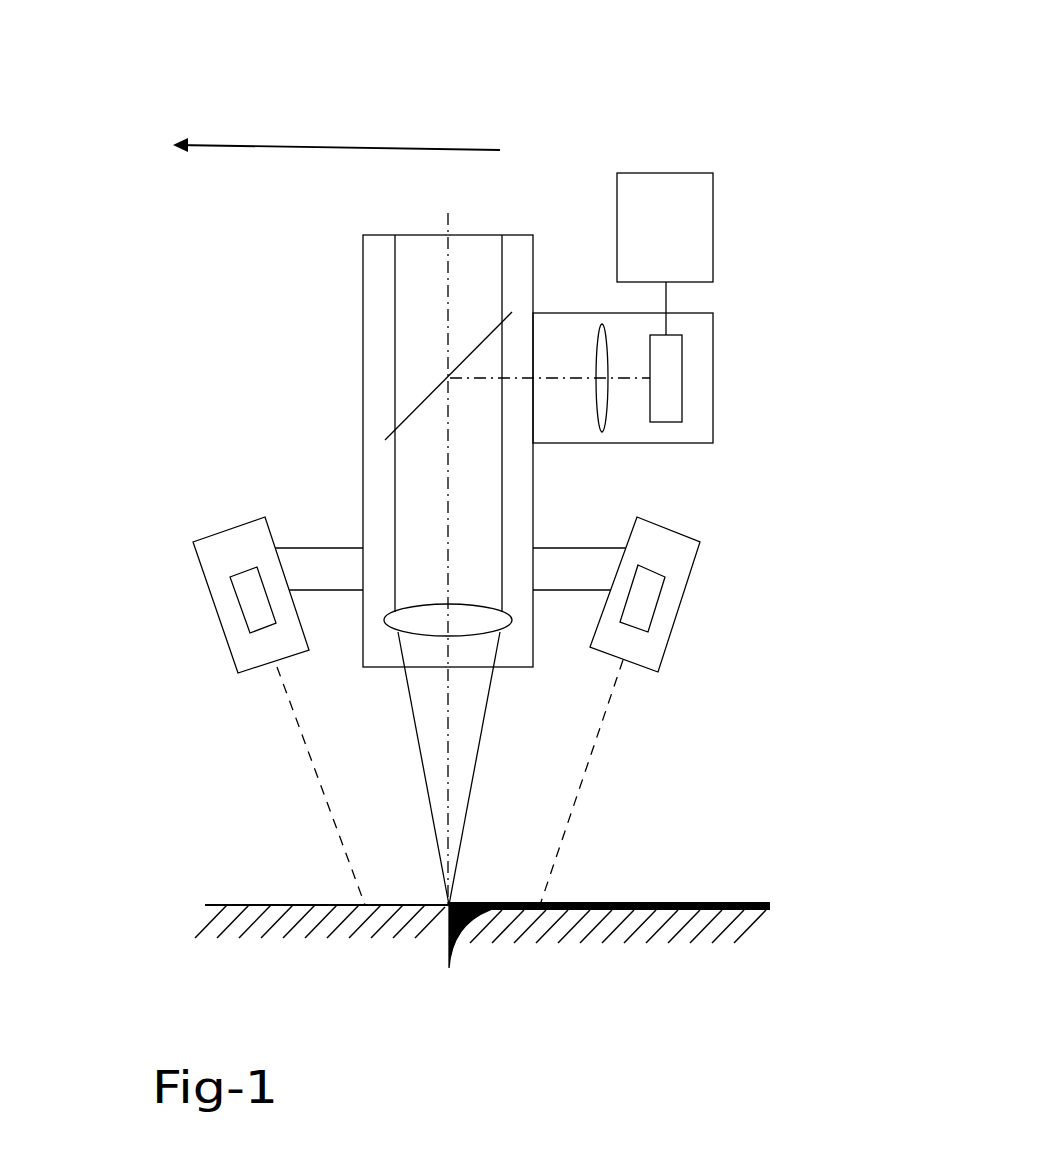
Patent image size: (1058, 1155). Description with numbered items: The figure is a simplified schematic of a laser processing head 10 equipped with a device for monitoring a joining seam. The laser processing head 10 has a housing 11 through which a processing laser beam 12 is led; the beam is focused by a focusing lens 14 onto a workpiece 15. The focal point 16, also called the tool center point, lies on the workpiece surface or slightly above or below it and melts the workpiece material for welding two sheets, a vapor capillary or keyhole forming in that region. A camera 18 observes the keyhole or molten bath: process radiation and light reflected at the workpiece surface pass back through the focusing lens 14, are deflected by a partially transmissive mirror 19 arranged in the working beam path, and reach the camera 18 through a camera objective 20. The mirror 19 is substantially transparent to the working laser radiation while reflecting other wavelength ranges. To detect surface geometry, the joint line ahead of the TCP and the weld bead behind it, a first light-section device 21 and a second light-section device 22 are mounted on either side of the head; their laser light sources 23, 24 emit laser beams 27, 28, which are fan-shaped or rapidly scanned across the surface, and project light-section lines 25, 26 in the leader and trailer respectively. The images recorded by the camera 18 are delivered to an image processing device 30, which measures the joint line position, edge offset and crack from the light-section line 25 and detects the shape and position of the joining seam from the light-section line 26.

The laser processing head 10 is at (562, 80).
The housing 11 is at (363, 300).
The processing laser beam 12 is at (415, 370).
The focusing lens 14 is at (423, 614).
The workpiece 15 is at (264, 905).
The focal point 16 is at (449, 905).
The camera 18 is at (672, 383).
The partially transmissive mirror 19 is at (395, 559).
The camera objective 20 is at (602, 417).
The first light-section device 21 is at (222, 532).
The second light-section device 22 is at (689, 536).
The laser light source 23 is at (250, 593).
The laser light source 24 is at (643, 600).
The light-section line 25 is at (368, 905).
The light-section line 26 is at (541, 905).
The laser beam 27 is at (312, 756).
The laser beam 28 is at (592, 745).
The image processing device 30 is at (690, 218).